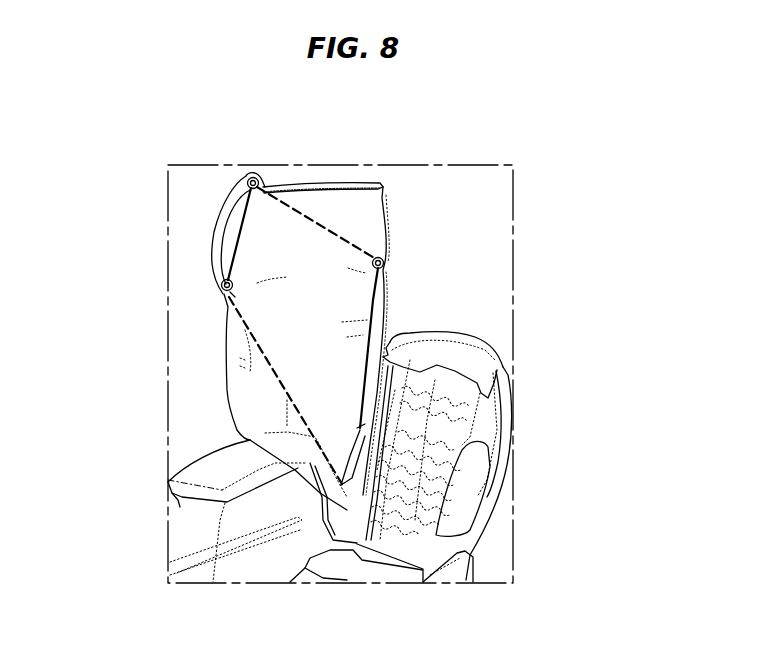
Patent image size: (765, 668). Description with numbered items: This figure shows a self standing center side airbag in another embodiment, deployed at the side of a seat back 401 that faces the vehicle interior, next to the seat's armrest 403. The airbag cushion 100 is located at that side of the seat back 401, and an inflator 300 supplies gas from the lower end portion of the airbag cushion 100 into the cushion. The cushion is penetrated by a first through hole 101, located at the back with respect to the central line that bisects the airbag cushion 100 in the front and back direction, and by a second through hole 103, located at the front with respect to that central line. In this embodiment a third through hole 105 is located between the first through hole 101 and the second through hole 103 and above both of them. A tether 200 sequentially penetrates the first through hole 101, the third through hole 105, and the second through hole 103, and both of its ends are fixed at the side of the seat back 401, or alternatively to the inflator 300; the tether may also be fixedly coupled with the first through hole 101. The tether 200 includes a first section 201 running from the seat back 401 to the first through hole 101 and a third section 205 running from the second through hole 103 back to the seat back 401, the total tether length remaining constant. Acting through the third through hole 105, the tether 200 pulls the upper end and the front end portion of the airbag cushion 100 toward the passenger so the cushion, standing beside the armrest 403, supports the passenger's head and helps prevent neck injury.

The airbag cushion 100 is at (352, 185).
The first through hole 101 is at (386, 262).
The second through hole 103 is at (221, 288).
The third through hole 105 is at (253, 178).
The tether 200 is at (232, 247).
The first section 201 is at (373, 336).
The third section 205 is at (245, 336).
The inflator 300 is at (320, 488).
The seat back 401 is at (448, 355).
The armrest 403 is at (222, 460).